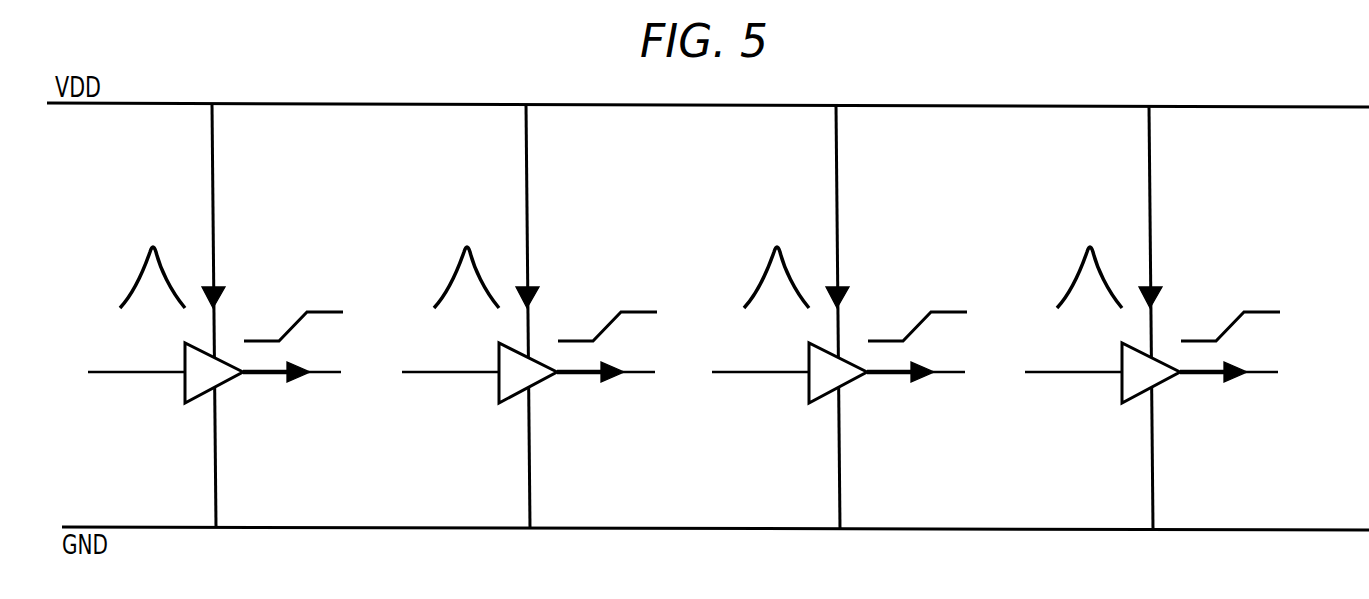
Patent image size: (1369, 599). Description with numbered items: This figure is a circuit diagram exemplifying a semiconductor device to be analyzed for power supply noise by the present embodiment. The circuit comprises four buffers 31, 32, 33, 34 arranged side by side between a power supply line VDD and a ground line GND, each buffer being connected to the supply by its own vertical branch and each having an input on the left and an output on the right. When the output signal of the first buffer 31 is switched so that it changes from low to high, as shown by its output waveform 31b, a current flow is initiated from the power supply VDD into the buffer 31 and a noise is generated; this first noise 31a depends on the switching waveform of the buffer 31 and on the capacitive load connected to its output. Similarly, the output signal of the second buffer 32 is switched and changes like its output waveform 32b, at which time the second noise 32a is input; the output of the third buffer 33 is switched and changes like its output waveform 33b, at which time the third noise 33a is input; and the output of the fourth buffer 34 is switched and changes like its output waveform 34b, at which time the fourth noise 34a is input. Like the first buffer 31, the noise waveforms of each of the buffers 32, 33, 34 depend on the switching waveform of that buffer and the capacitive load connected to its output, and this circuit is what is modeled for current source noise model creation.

The buffer 31 is at (228, 382).
The noise 1 31a is at (135, 287).
The waveform 1 31b is at (303, 318).
The buffer 32 is at (542, 382).
The noise 2 32a is at (449, 287).
The waveform 2 32b is at (617, 318).
The buffer 33 is at (852, 382).
The noise 3 33a is at (759, 287).
The waveform 3 33b is at (927, 318).
The buffer 34 is at (1165, 382).
The noise 4 34a is at (1072, 287).
The waveform 4 34b is at (1240, 318).